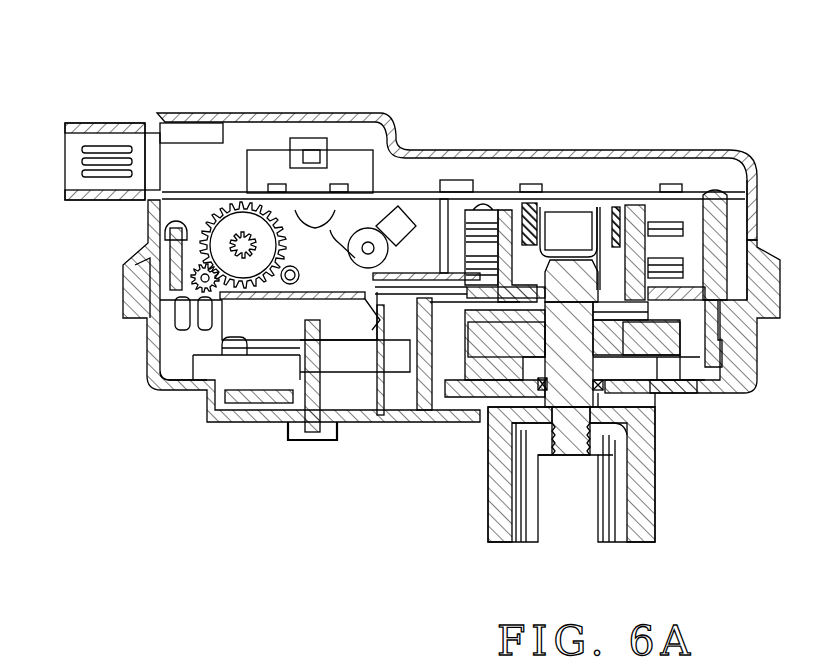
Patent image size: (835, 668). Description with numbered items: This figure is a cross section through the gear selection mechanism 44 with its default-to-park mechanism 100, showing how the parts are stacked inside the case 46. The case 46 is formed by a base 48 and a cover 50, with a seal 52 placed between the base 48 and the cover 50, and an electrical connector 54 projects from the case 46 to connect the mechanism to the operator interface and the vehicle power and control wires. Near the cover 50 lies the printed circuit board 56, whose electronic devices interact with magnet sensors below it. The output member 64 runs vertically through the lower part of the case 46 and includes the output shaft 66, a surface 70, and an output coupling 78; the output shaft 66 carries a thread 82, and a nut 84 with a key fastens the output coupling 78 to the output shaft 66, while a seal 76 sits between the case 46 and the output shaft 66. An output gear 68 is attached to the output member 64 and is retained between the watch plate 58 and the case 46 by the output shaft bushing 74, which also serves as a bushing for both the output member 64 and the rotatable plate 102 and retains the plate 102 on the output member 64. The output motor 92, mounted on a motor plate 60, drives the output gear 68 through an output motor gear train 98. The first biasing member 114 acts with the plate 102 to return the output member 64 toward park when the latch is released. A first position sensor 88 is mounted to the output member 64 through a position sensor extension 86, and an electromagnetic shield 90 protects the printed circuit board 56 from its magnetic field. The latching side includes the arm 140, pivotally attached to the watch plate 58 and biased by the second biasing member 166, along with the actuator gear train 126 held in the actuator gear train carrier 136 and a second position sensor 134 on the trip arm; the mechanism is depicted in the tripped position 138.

The gear selection mechanism 44 is at (270, 78).
The case 46 is at (120, 304).
The base 48 is at (150, 386).
The cover 50 is at (265, 115).
The seal 52 is at (146, 278).
The electrical connector 54 is at (115, 150).
The printed circuit board 56 is at (400, 190).
The watch plate 58 is at (428, 370).
The motor plate 60 is at (238, 352).
The output member 64 is at (692, 474).
The output shaft 66 is at (533, 427).
The output gear 68 is at (572, 385).
The surface 70 is at (510, 338).
The output shaft bushing 74 is at (603, 307).
The seal 76 is at (640, 420).
The output coupling 78 is at (500, 495).
The thread 82 is at (567, 443).
The nut 84 is at (607, 443).
The position sensor extension 86 is at (543, 232).
The first position sensor 88 is at (575, 228).
The electromagnetic shield 90 is at (517, 207).
The output motor 92 is at (277, 163).
The output motor gear train 98 is at (335, 412).
The default-to-park mechanism 100 is at (123, 230).
The rotatable plate 102 is at (640, 220).
The first biasing member 114 is at (470, 262).
The actuator gear train 126 is at (252, 210).
The second position sensor 134 is at (385, 210).
The actuator gear train carrier 136 is at (220, 215).
The tripped position 138 is at (180, 312).
The arm 140 is at (427, 280).
The second biasing member 166 is at (375, 355).